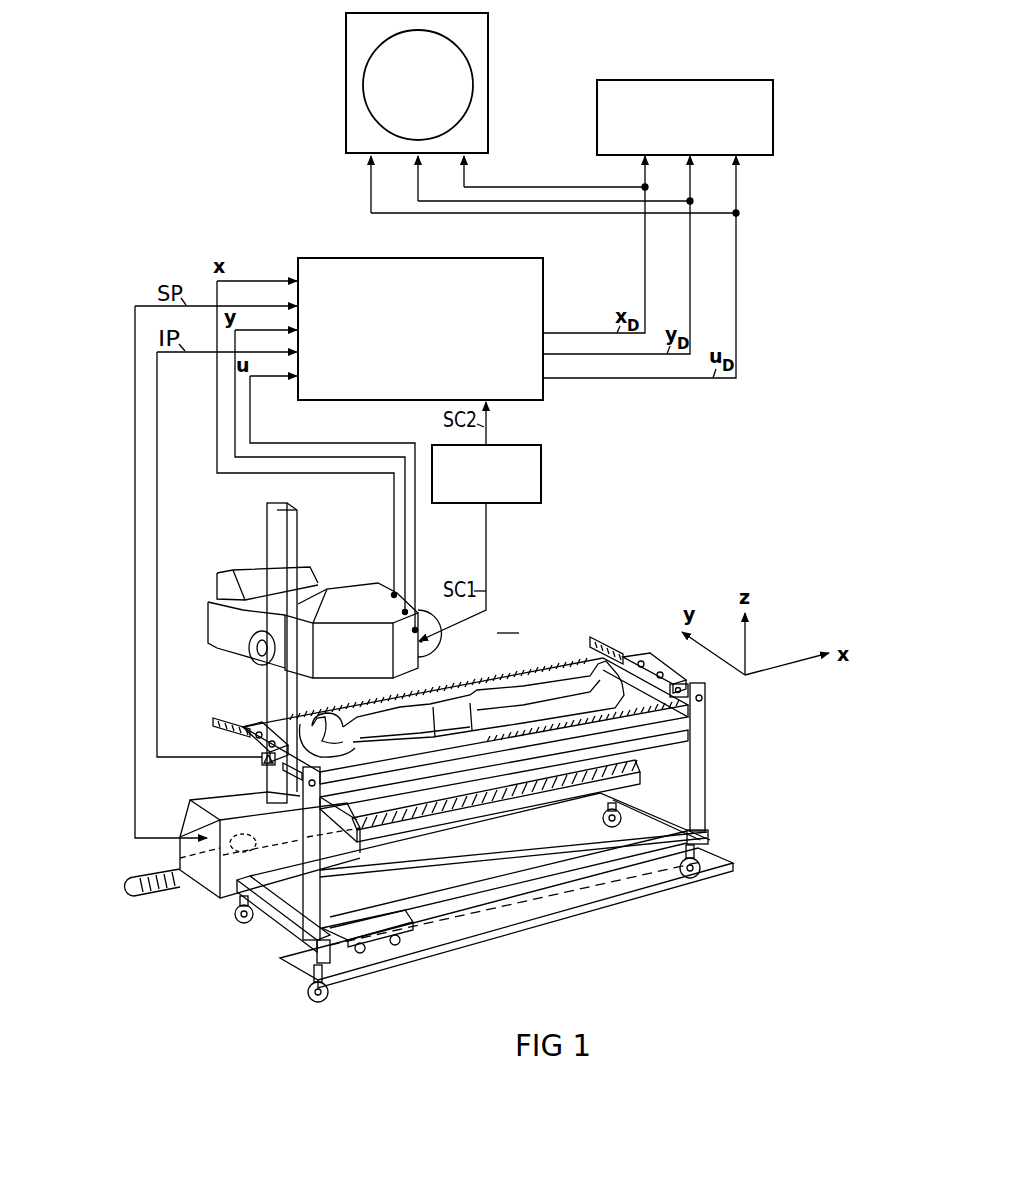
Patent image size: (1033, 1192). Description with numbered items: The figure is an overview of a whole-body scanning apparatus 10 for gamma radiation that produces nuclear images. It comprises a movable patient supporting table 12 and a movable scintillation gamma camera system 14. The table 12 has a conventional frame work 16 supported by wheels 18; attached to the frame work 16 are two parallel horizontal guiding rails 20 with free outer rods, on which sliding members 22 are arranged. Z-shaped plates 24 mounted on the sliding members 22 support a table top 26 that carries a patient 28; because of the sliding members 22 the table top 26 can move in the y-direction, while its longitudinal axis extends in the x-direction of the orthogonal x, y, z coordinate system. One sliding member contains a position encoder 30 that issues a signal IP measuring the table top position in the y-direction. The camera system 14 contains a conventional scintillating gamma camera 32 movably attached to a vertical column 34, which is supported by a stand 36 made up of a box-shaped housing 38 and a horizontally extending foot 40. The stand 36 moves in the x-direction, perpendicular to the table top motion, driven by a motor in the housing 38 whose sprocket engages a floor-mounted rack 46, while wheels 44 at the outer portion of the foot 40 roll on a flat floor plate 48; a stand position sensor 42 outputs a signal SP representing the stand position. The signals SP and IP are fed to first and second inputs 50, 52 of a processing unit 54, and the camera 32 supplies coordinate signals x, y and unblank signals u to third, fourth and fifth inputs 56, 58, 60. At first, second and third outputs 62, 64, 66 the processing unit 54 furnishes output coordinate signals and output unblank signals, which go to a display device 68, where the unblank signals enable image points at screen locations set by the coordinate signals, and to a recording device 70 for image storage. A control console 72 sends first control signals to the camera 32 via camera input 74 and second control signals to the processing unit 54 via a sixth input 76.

The whole-body scanning apparatus 10 is at (519, 633).
The patient supporting table 12 is at (708, 771).
The scintillation gamma camera system 14 is at (242, 657).
The frame work 16 is at (285, 927).
The wheels 18 is at (235, 912).
The guiding rails 20 is at (595, 642).
The sliding members 22 is at (683, 684).
The z-shaped plates 24 is at (650, 658).
The table top 26 is at (538, 676).
The patient 28 is at (453, 713).
The position encoder 30 is at (262, 763).
The scintillating gamma camera 32 is at (378, 633).
The vertical column 34 is at (288, 512).
The stand 36 is at (182, 817).
The box-shaped housing 38 is at (220, 803).
The foot 40 is at (413, 928).
The stand position sensor 42 is at (252, 832).
The wheels 44 is at (396, 946).
The rack 46 is at (172, 873).
The flat plate 48 is at (531, 919).
The first input 50 is at (294, 304).
The second input 52 is at (294, 350).
The processing unit 54 is at (428, 268).
The third input 56 is at (294, 279).
The fourth input 58 is at (294, 328).
The fifth input 60 is at (294, 374).
The first output 62 is at (546, 333).
The second output 64 is at (546, 354).
The third output 66 is at (546, 378).
The display device 68 is at (477, 111).
The recording device 70 is at (765, 113).
The control console 72 is at (533, 471).
The camera input 74 is at (432, 640).
The sixth input 76 is at (490, 410).